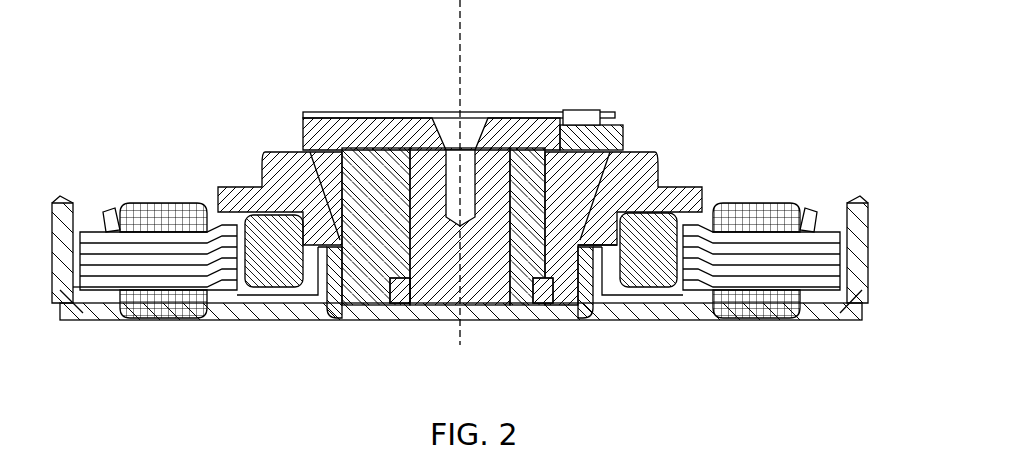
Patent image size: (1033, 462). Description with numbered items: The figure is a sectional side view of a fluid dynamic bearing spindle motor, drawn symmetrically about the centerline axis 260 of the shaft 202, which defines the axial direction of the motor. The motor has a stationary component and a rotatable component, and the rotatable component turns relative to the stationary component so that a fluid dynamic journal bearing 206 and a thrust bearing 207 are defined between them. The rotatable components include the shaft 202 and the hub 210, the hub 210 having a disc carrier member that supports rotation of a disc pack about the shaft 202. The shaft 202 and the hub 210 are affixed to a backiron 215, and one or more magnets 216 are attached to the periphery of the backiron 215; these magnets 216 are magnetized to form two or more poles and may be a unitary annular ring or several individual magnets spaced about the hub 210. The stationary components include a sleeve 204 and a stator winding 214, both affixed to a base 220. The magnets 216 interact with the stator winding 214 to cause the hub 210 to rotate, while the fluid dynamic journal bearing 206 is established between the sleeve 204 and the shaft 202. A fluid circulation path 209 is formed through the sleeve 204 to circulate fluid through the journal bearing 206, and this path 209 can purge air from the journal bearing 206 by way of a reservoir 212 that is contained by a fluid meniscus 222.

The shaft 202 is at (433, 143).
The sleeve 204 is at (512, 155).
The fluid dynamic journal bearing 206 is at (481, 150).
The thrust bearing 207 is at (540, 145).
The fluid circulation path 209 is at (600, 185).
The hub 210 is at (598, 178).
The reservoir 212 is at (598, 145).
The stator winding 214 is at (152, 268).
The backiron 215 is at (303, 246).
The magnet 216 is at (265, 268).
The base 220 is at (622, 290).
The fluid meniscus 222 is at (575, 205).
The axis 260 is at (458, 36).